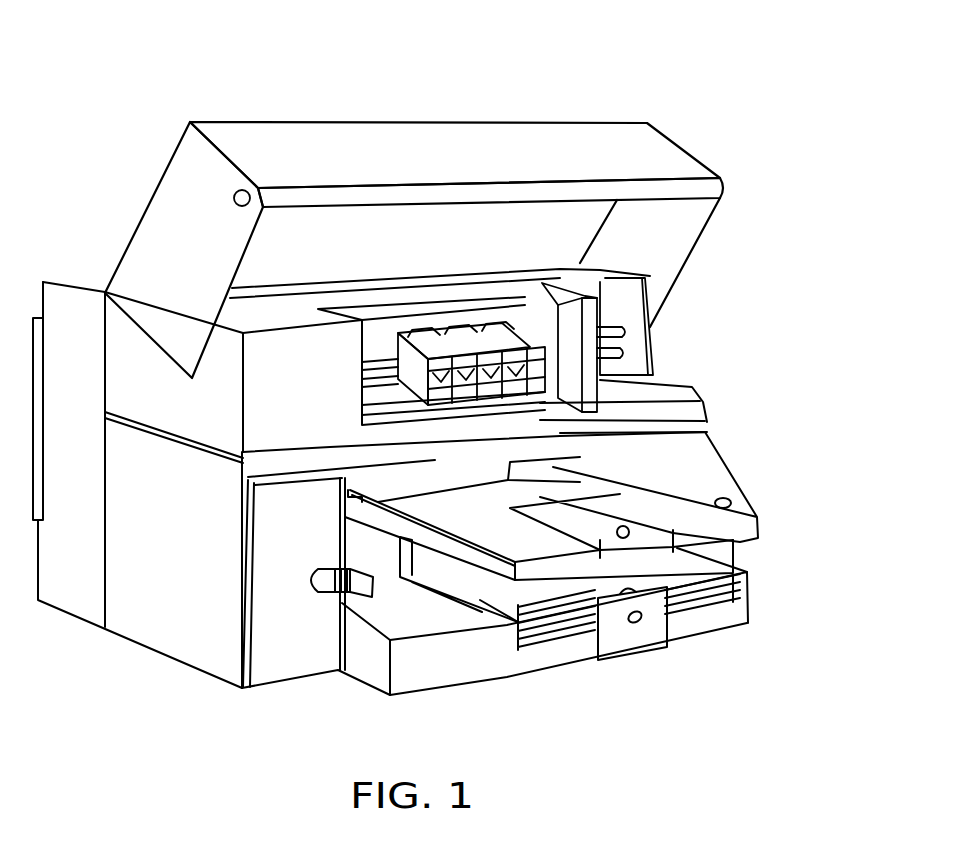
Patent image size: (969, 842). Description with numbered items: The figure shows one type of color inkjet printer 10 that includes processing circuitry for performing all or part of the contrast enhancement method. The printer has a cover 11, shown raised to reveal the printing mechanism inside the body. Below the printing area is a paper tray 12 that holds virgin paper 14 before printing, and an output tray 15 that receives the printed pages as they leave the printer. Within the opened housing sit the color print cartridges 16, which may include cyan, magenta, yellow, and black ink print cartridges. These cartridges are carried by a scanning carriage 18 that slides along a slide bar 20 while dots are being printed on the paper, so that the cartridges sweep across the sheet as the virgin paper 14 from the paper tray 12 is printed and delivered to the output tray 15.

The color inkjet printer 10 is at (592, 95).
The cover 11 is at (152, 192).
The paper tray 12 is at (557, 655).
The virgin paper 14 is at (750, 598).
The output tray 15 is at (728, 497).
The color print cartridges 16 is at (410, 368).
The scanning carriage 18 is at (410, 385).
The slide bar 20 is at (625, 357).